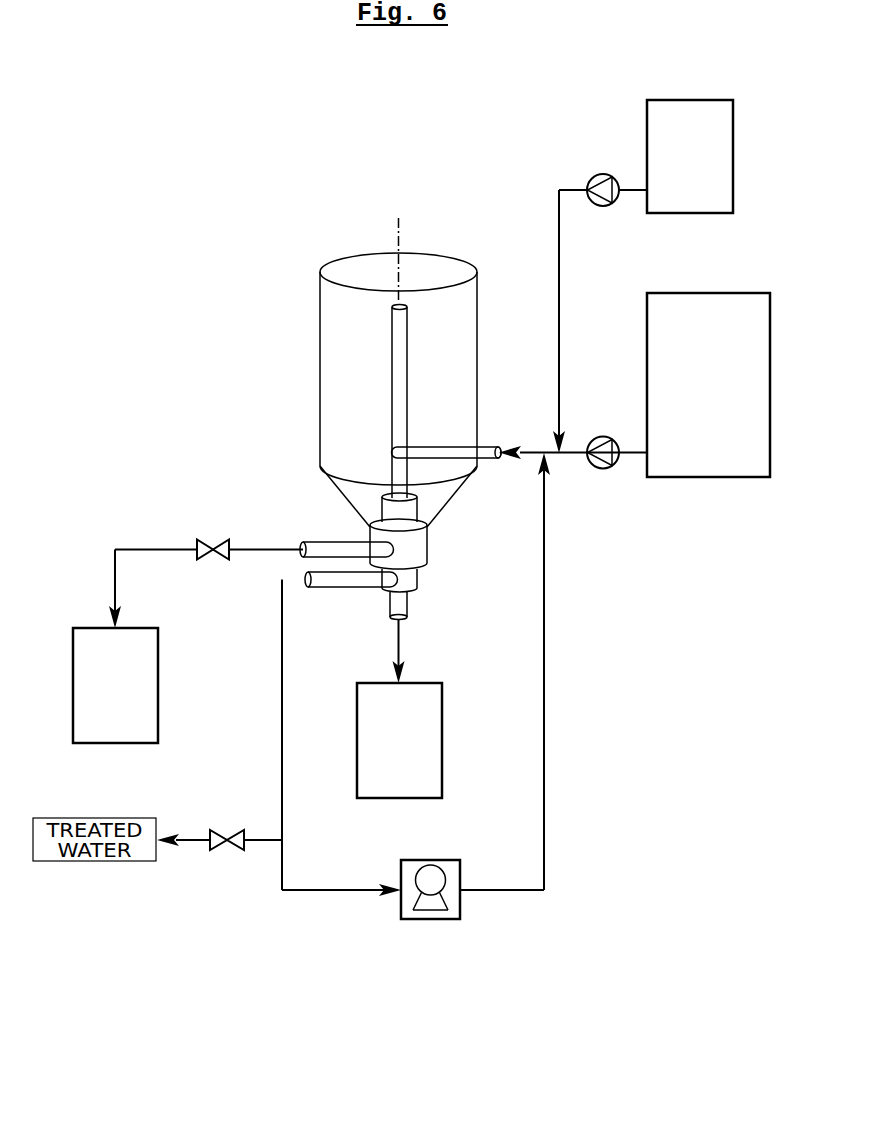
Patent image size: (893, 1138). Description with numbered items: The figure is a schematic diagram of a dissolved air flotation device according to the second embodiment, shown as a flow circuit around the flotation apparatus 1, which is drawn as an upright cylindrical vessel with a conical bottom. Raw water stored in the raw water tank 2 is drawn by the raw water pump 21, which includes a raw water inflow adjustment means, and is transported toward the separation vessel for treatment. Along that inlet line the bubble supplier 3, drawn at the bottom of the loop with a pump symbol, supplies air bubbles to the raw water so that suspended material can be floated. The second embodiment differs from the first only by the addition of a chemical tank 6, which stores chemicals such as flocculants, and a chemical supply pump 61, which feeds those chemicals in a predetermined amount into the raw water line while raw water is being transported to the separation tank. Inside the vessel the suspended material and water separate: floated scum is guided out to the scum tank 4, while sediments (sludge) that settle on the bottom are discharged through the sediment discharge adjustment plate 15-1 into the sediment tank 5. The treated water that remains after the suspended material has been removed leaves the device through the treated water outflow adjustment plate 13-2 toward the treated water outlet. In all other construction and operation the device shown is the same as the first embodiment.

The reactor vessel 1 is at (455, 252).
The raw water tank 2 is at (709, 287).
The raw water pump 21 is at (605, 428).
The bubble supplier 3 is at (432, 928).
The scum tank 4 is at (376, 677).
The sediment tank 5 is at (92, 622).
The chemical tank 6 is at (639, 144).
The chemical supply pump 61 is at (605, 214).
The sediment discharge adjustment plate 15-1 is at (217, 567).
The treated water outflow adjustment plate 13-2 is at (229, 854).